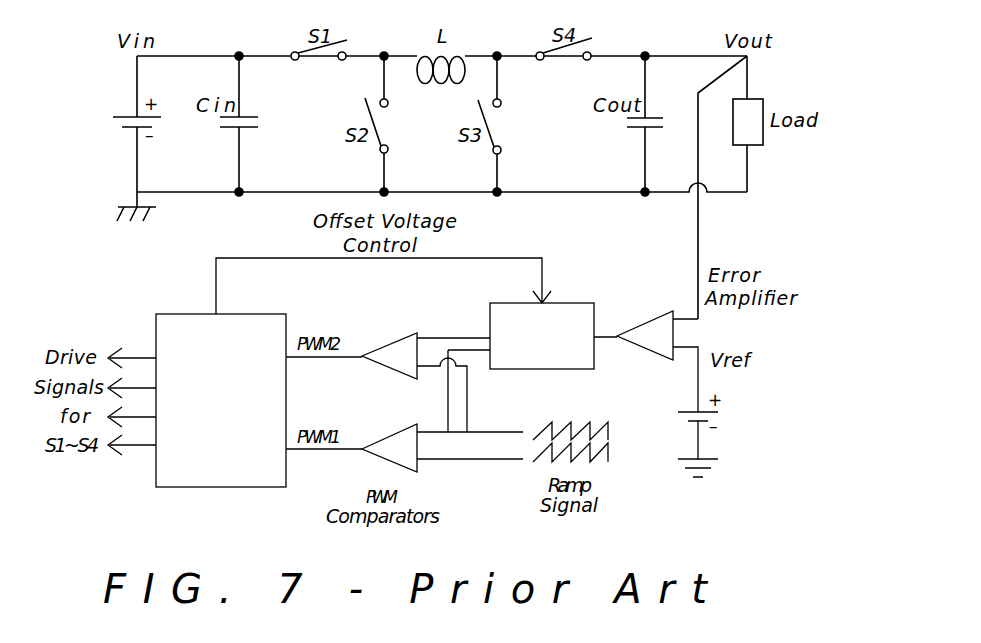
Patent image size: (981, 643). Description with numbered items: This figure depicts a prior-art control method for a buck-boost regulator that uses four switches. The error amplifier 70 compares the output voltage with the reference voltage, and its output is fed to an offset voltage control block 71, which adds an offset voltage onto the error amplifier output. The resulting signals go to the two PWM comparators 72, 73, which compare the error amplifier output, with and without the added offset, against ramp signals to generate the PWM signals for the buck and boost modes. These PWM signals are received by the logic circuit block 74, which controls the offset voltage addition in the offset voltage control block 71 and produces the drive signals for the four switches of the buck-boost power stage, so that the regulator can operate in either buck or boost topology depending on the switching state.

The error amplifier 70 is at (651, 317).
The offset voltage control block 71 is at (577, 303).
The PWM comparator 72 is at (389, 460).
The PWM comparator 73 is at (398, 336).
The logic circuit block 74 is at (221, 488).